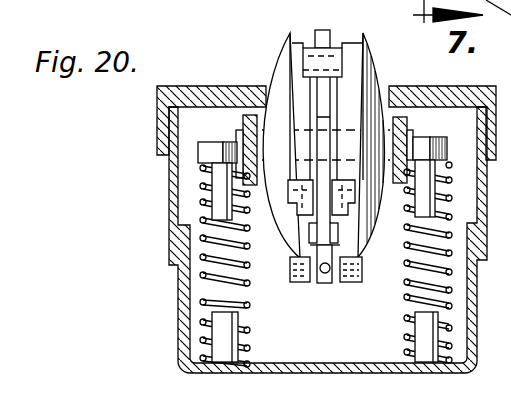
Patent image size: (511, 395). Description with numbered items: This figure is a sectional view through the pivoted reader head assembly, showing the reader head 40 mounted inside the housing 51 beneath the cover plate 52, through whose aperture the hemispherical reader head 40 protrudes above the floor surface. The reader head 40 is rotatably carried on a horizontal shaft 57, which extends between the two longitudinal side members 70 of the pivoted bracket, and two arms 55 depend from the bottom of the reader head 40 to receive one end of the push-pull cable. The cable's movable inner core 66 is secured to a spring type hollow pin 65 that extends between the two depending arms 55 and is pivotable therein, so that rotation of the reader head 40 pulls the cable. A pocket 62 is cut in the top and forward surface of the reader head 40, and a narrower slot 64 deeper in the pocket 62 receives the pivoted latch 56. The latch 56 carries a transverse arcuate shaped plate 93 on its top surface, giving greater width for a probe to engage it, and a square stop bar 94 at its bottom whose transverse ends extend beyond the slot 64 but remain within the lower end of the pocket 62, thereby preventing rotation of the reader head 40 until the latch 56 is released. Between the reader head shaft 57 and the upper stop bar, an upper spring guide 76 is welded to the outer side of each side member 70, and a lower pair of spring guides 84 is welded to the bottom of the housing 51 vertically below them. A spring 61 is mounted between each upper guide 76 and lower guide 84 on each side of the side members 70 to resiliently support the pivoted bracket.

The reader head 40 is at (267, 60).
The housing 51 is at (346, 338).
The cover plate 52 is at (240, 86).
The depending arms 55 is at (352, 283).
The pivoted latch member 56 is at (331, 38).
The horizontal shaft 57 is at (414, 135).
The spring 61 is at (198, 276).
The pocket 62 is at (296, 34).
The slot 64 is at (343, 92).
The spring type hollow pin 65 is at (365, 275).
The inner core 66 is at (324, 284).
The longitudinal side members 70 is at (244, 118).
The upper spring guides 76 is at (222, 177).
The lower spring guides 84 is at (198, 344).
The transverse arcuate shaped plate 93 is at (343, 59).
The square stop bar 94 is at (302, 222).